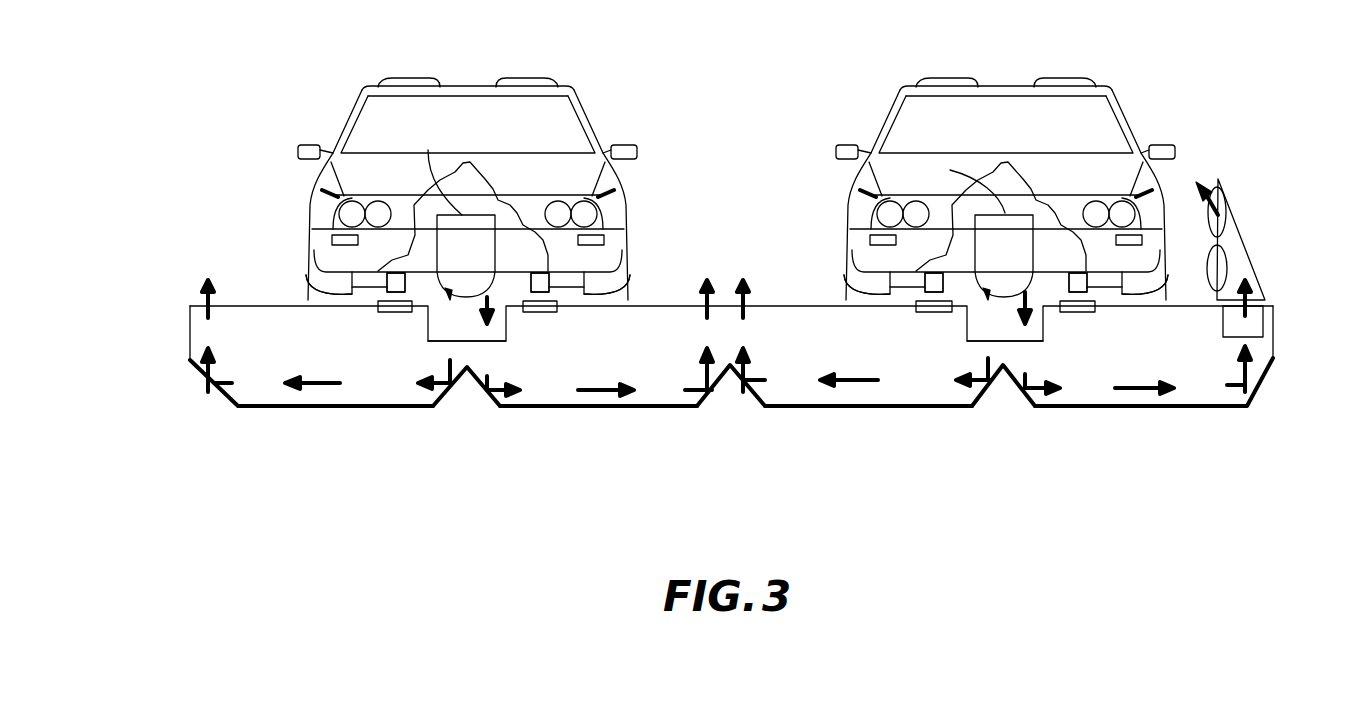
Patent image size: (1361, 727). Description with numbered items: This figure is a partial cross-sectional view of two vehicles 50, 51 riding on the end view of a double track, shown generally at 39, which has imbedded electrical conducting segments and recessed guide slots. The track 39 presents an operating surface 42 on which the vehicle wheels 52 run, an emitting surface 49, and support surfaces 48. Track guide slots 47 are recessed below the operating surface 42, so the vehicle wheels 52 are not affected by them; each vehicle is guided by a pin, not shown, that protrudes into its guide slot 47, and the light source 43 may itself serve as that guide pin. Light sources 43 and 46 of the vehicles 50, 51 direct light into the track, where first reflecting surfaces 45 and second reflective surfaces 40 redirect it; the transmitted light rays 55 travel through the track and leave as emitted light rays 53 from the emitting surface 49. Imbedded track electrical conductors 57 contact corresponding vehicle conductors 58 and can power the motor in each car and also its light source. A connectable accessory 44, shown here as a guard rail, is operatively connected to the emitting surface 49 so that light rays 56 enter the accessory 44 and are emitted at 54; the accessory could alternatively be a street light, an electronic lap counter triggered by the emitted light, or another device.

The track 39 is at (896, 493).
The second reflective surfaces 40 is at (218, 400).
The operating surface 42 is at (690, 306).
The light source 43 is at (428, 150).
The connectable accessory 44 is at (1240, 230).
The first reflecting surfaces 45 is at (455, 398).
The light source 46 is at (950, 170).
The track guide slots 47 is at (428, 352).
The support surfaces 48 is at (268, 406).
The emitting surface 49 is at (215, 306).
The vehicle 50 is at (587, 118).
The vehicle 51 is at (1119, 106).
The vehicle wheels 52 is at (310, 240).
The emitted light rays 53 is at (212, 250).
The emitted light at accessory 54 is at (1202, 148).
The transmitted light rays 55 is at (300, 398).
The light rays 56 is at (1248, 290).
The imbedded track electrical conductors 57 is at (392, 312).
The vehicle conductors 58 is at (318, 282).